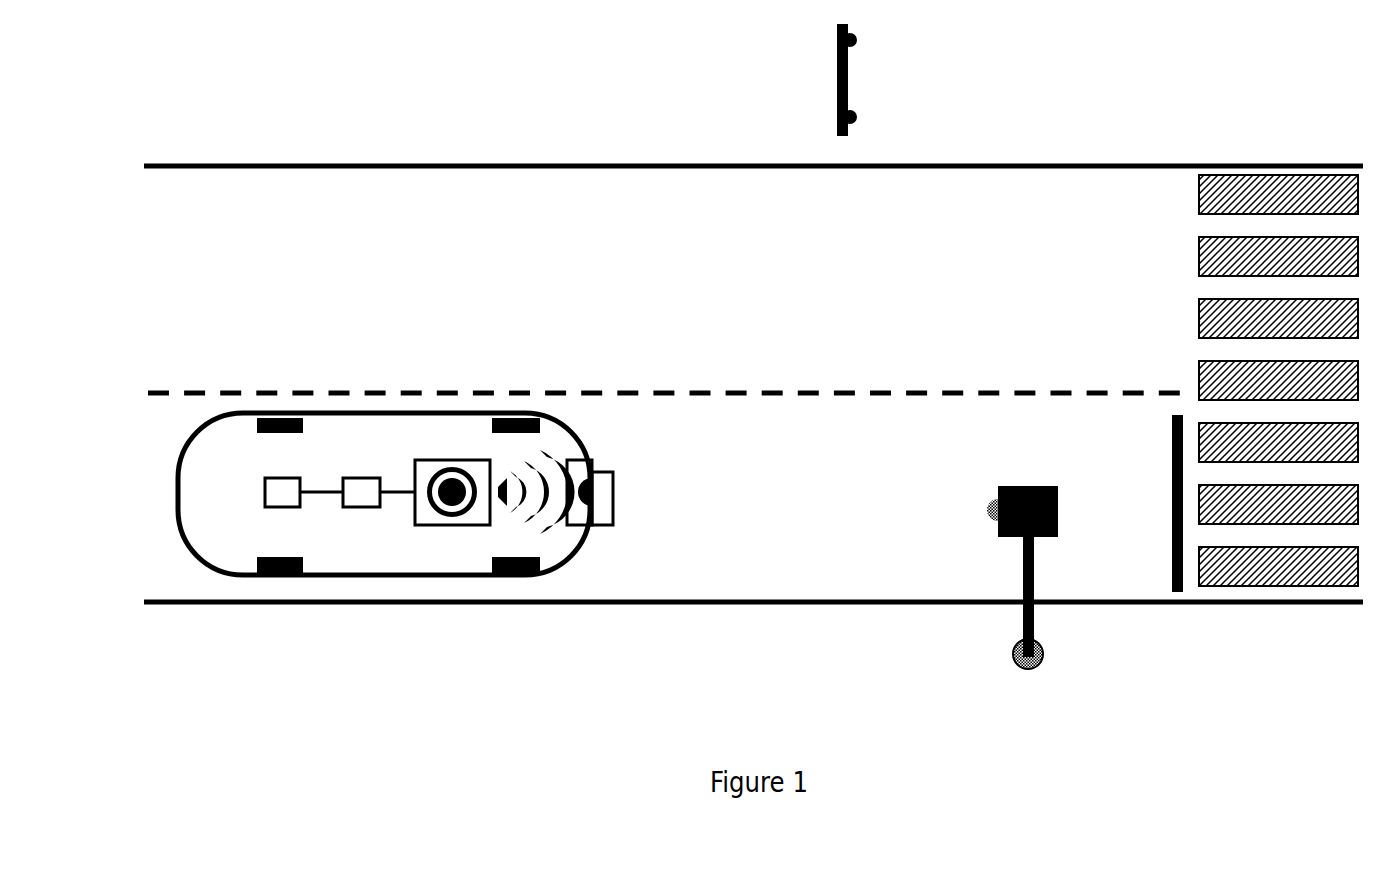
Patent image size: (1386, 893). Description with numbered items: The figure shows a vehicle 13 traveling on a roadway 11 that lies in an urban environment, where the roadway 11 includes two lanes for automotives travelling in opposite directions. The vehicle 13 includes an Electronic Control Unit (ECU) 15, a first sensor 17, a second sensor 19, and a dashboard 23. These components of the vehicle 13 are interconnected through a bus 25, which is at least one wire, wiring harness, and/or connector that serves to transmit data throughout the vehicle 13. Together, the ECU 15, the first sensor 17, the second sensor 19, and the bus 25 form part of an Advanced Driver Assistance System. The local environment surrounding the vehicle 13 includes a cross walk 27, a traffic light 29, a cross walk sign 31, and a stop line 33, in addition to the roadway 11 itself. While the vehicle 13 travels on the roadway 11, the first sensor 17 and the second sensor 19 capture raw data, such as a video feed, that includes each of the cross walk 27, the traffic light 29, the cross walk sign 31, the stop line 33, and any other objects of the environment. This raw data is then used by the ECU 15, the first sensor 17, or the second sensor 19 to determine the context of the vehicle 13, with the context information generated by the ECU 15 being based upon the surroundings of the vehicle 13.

The roadway 11 is at (398, 165).
The vehicle 13 is at (178, 480).
The Electronic Control Unit 15 is at (283, 507).
The first sensor 17 is at (452, 460).
The second sensor 19 is at (613, 490).
The dashboard 23 is at (358, 507).
The bus 25 is at (318, 491).
The cross walk 27 is at (1315, 185).
The traffic light 29 is at (1040, 660).
The cross walk sign 31 is at (848, 82).
The stop line 33 is at (1183, 590).